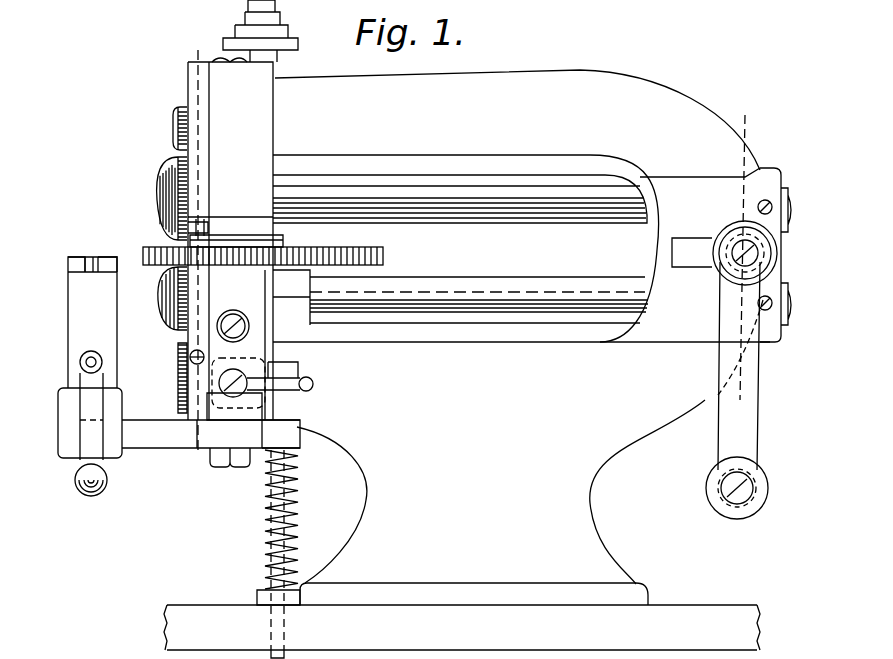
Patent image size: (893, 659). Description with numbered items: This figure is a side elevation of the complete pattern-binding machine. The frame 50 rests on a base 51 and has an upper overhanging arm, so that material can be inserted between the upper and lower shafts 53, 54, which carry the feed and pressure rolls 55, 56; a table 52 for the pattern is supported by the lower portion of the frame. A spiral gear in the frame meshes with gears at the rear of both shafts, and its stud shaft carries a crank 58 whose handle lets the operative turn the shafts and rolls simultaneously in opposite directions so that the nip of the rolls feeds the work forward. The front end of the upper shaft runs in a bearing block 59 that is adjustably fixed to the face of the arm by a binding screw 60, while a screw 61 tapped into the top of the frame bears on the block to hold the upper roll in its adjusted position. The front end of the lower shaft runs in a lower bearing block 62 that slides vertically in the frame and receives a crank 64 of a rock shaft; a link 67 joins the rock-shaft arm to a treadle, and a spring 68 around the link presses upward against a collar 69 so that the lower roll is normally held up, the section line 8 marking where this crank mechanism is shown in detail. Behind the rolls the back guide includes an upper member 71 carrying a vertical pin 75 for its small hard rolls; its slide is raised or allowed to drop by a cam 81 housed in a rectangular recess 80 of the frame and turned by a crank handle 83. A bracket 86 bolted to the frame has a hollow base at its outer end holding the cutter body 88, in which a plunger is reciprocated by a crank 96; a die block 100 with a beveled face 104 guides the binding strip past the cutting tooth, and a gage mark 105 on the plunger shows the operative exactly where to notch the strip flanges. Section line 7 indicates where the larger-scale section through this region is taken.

The section line 7 is at (739, 258).
The section line 8 is at (196, 255).
The frame 50 is at (472, 360).
The base 51 is at (617, 592).
The table 52 is at (385, 258).
The upper shaft 53 is at (527, 208).
The lower shaft 54 is at (520, 292).
The upper feed roll 55 is at (160, 186).
The lower pressure roll 56 is at (172, 318).
The crank 58 is at (770, 356).
The bearing block 59 is at (187, 80).
The binding screw 60 is at (174, 126).
The screw 61 is at (221, 56).
The lower bearing block 62 is at (190, 330).
The crank 64 is at (178, 380).
The link 67 is at (292, 556).
The spring 68 is at (298, 517).
The collar 69 is at (300, 437).
The upper member of back guide 71 is at (285, 242).
The vertical pin 75 is at (208, 229).
The rectangular recess 80 is at (180, 404).
The cam 81 is at (185, 397).
The crank handle 83 is at (302, 378).
The bracket 86 is at (165, 448).
The cutter body 88 is at (92, 376).
The crank 96 is at (94, 349).
The die block 100 is at (114, 257).
The beveled face 104 is at (75, 257).
The gage mark 105 is at (93, 257).